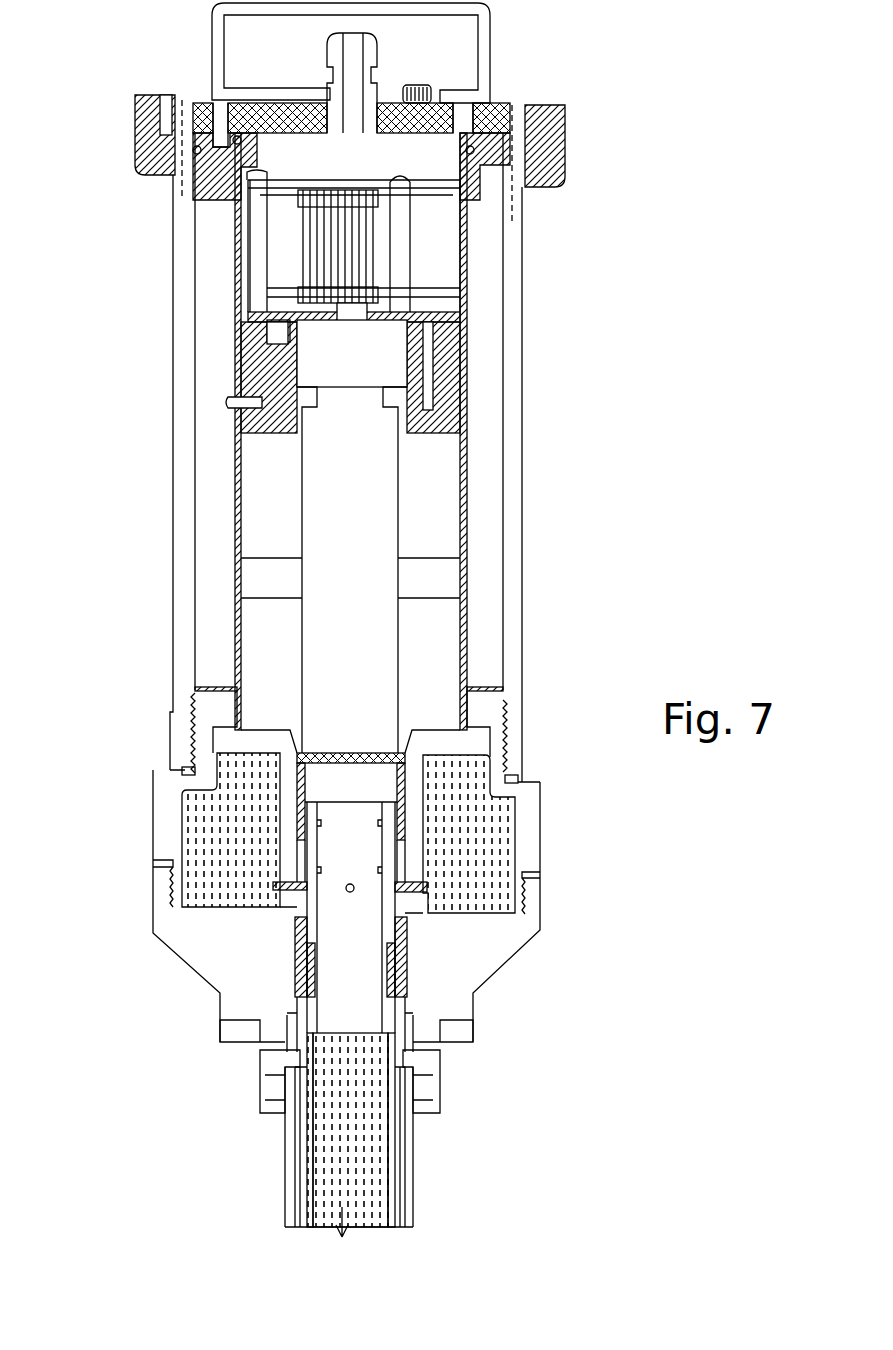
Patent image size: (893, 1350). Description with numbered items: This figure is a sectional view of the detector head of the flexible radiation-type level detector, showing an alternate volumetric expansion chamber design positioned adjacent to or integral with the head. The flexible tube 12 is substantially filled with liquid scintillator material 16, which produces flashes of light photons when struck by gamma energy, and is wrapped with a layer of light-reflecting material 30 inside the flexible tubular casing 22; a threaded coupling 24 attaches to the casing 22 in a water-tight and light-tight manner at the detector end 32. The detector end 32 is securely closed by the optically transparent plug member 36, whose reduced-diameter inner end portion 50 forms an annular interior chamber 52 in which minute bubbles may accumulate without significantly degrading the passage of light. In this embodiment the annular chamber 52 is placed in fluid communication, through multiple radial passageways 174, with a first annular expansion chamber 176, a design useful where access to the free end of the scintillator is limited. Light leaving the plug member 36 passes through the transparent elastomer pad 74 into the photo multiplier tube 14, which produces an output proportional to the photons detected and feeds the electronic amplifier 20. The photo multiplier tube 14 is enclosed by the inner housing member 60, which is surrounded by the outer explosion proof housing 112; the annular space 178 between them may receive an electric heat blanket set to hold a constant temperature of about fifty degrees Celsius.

The flexible tube 12 is at (393, 1168).
The photo multiplier tube 14 is at (375, 516).
The liquid scintillator material 16 is at (333, 1172).
The electronic amplifier 20 is at (439, 257).
The flexible tubular casing 22 is at (408, 1203).
The threaded coupling 24 is at (466, 1091).
The light-reflecting material 30 is at (303, 1203).
The detector end 32 is at (237, 1132).
The transparent plug member 36 is at (340, 937).
The inner end portion 50 is at (362, 1010).
The annular interior chamber 52 is at (392, 931).
The housing member 60 is at (238, 462).
The transparent elastomer pad 74 is at (365, 745).
The outer explosion proof housing 112 is at (508, 410).
The radial passageway 174 is at (293, 890).
The first annular expansion chamber 176 is at (489, 822).
The annular space 178 is at (482, 333).